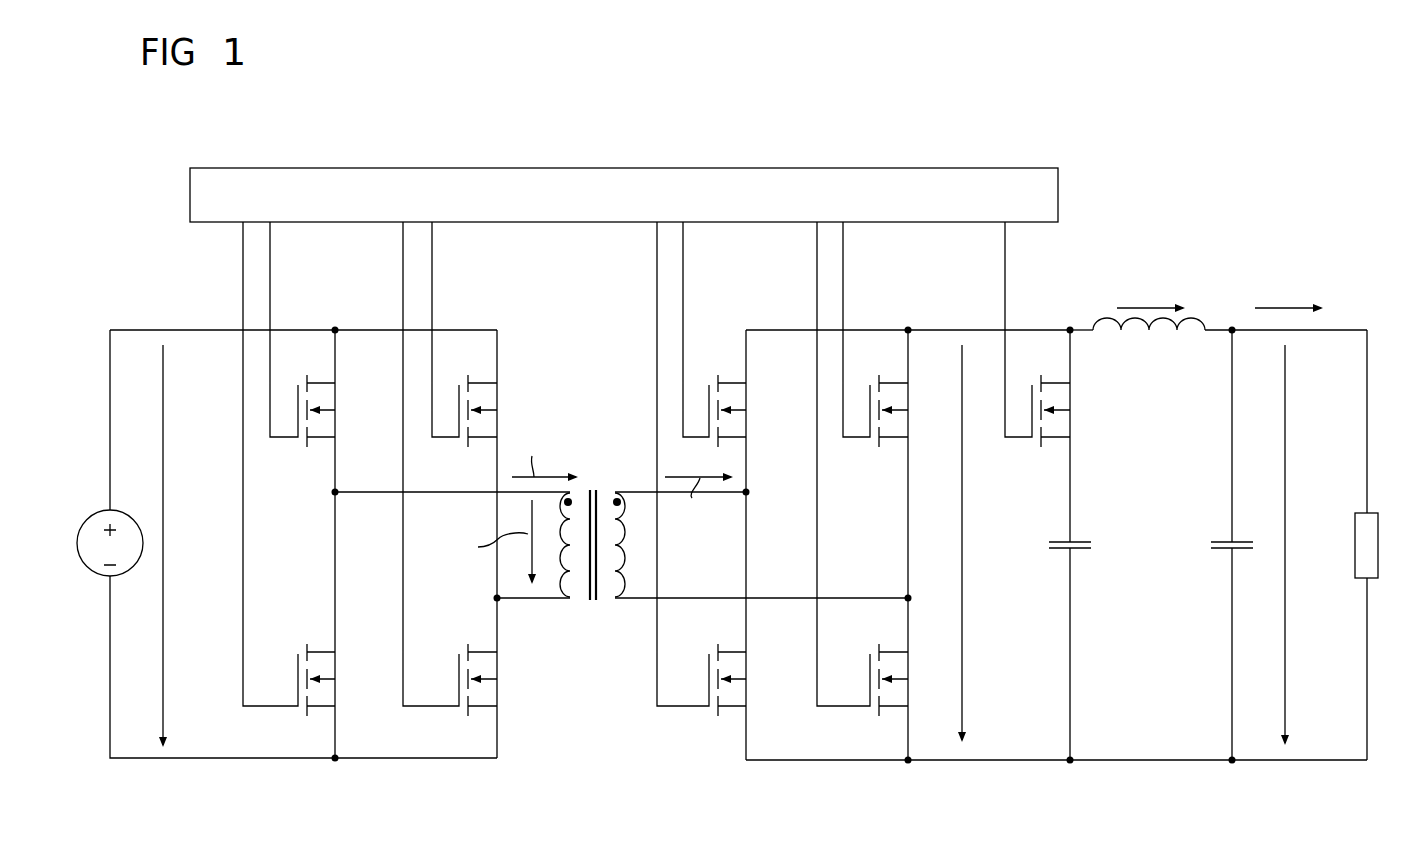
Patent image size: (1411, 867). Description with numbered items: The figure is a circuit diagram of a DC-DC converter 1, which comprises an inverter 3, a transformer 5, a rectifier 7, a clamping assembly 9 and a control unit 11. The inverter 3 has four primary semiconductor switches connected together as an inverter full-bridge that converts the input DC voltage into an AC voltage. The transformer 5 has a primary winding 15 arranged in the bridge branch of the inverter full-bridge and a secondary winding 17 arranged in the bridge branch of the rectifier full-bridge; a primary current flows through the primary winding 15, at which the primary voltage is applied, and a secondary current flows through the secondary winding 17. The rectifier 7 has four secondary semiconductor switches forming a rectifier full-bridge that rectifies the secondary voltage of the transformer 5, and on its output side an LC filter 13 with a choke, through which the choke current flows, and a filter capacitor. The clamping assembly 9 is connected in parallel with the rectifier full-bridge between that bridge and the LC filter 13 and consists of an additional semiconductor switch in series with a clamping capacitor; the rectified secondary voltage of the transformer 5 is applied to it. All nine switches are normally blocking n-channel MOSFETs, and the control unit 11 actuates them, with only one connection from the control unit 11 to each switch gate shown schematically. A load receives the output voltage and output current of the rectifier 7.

The DC-DC converter 1 is at (153, 248).
The inverter 3 is at (332, 778).
The transformer 5 is at (600, 472).
The rectifier 7 is at (904, 780).
The clamping assembly 9 is at (1072, 306).
The control unit 11 is at (744, 168).
The LC filter 13 is at (1206, 306).
The primary winding 15 is at (568, 600).
The secondary winding 17 is at (618, 600).